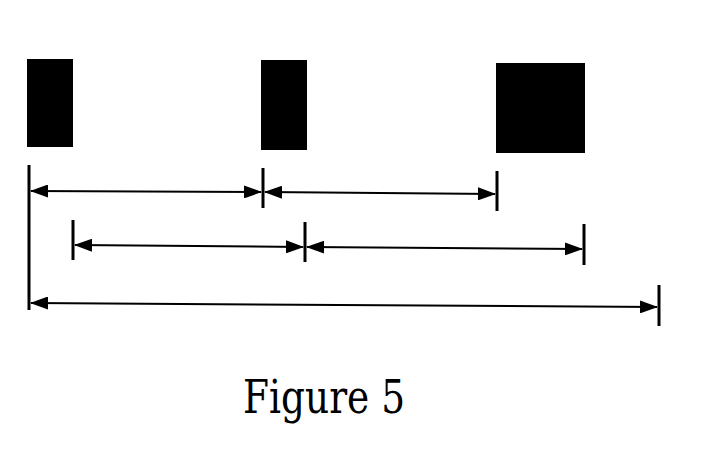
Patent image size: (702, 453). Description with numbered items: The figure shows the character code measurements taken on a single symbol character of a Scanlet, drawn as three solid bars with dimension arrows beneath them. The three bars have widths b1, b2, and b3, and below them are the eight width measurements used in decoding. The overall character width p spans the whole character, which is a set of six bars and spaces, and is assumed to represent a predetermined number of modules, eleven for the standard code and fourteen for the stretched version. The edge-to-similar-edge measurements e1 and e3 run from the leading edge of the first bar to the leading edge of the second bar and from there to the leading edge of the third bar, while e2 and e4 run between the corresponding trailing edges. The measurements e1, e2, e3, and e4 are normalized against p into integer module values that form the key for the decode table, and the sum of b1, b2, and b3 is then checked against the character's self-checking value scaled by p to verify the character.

The first bar width measurement b1 is at (50, 87).
The second bar width measurement b2 is at (284, 89).
The third bar width measurement b3 is at (540, 93).
The first edge-to-similar-edge measurement e1 is at (146, 170).
The second edge-to-similar-edge measurement e2 is at (189, 231).
The third edge-to-similar-edge measurement e3 is at (380, 174).
The fourth edge-to-similar-edge measurement e4 is at (444, 233).
The overall character width p is at (344, 291).